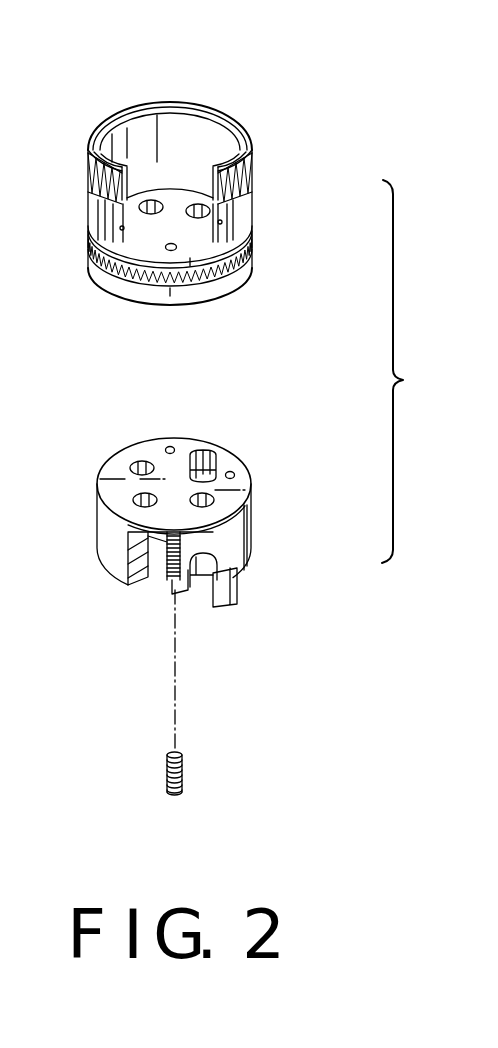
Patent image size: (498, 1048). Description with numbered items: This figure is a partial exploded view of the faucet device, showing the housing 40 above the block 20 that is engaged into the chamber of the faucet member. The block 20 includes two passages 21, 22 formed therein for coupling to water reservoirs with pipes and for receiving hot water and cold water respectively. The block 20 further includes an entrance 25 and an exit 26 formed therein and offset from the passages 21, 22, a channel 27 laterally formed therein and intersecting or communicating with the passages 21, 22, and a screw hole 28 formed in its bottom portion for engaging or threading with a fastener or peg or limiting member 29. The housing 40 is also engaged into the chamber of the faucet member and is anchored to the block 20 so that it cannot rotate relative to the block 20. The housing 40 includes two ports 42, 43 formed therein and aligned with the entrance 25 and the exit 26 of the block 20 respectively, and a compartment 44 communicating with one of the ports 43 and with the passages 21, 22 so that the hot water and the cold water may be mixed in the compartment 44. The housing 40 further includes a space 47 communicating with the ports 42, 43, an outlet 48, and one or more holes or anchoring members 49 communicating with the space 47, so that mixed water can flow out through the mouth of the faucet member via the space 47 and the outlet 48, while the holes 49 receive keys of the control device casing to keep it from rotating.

The block 20 is at (247, 515).
The passage 21 is at (138, 462).
The passage 22 is at (205, 503).
The entrance 25 is at (202, 452).
The exit 26 is at (143, 503).
The channel 27 is at (253, 558).
The screw hole 28 is at (173, 583).
The limiting member 29 is at (168, 788).
The housing 40 is at (228, 117).
The port 42 is at (233, 282).
The port 43 is at (152, 198).
The compartment 44 is at (240, 477).
The space 47 is at (137, 128).
The outlet 48 is at (192, 250).
The anchoring member 49 is at (170, 249).